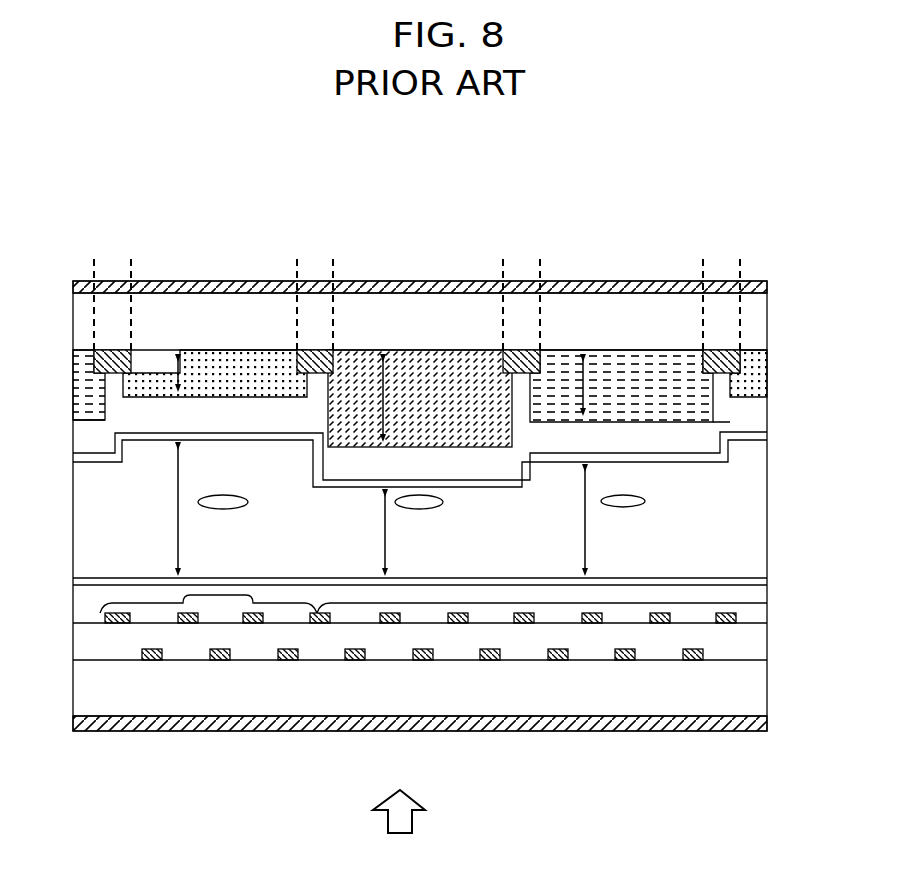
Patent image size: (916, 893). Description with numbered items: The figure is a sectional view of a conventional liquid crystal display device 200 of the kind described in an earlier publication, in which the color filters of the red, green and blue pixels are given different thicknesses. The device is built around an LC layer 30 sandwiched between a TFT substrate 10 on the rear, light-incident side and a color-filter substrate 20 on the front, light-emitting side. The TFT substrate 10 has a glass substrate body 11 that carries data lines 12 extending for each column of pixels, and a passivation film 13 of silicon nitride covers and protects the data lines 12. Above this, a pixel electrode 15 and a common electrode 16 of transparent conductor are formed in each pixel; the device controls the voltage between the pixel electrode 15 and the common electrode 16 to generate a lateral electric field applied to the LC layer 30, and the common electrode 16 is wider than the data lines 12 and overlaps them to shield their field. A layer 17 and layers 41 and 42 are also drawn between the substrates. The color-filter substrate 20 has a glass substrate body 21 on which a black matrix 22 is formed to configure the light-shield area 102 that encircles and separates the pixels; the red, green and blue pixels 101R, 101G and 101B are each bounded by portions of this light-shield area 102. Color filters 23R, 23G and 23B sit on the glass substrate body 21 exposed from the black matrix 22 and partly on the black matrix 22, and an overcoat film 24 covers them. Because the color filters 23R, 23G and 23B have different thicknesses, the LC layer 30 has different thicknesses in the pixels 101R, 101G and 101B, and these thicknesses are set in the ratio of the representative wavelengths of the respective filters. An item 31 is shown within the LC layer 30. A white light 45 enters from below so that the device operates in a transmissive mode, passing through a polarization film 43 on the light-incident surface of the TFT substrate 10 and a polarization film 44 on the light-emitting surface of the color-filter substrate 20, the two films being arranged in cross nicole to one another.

The display device 200 is at (720, 124).
The blue pixel 101B is at (94, 259).
The red pixel 101R is at (297, 259).
The green pixel 101G is at (703, 259).
The light-shield area 102 is at (131, 259).
The polarization film 44 is at (767, 281).
The glass substrate body 21 is at (757, 322).
The black matrix 22 is at (757, 362).
The red color filter 23R is at (155, 392).
The blue color filter 23B is at (365, 447).
The green color filter 23G is at (668, 413).
The overcoat film 24 is at (757, 420).
The color-filter substrate 20 is at (845, 305).
The protective layer 42 is at (742, 440).
The LC layer 30 is at (757, 515).
The void 31 is at (625, 500).
The electrode layer 41 is at (745, 580).
The passivation film 13 is at (459, 577).
The data line 12 is at (132, 603).
The pixel electrode 15 is at (216, 595).
The insulating layer 17 is at (459, 707).
The common electrode 16 is at (155, 660).
The glass substrate body 11 is at (757, 690).
The polarization film 43 is at (763, 725).
The TFT substrate 10 is at (845, 595).
The white light 45 is at (412, 820).